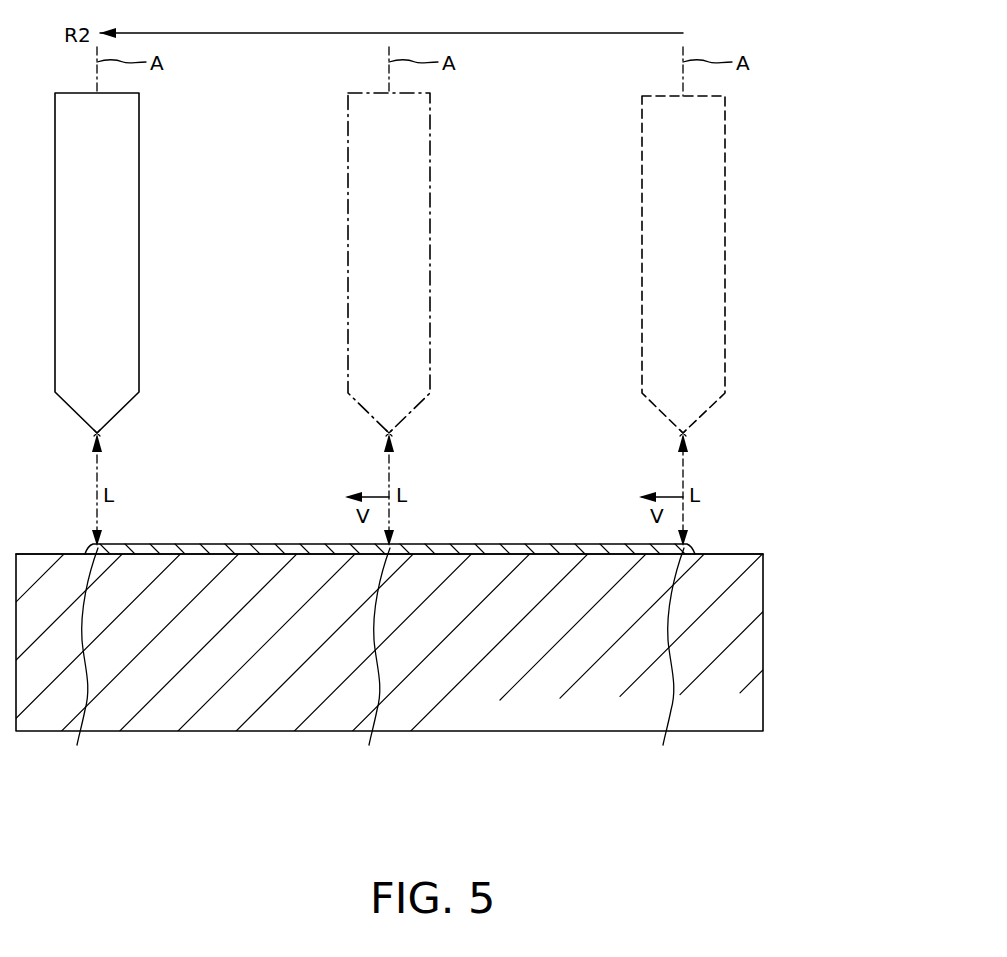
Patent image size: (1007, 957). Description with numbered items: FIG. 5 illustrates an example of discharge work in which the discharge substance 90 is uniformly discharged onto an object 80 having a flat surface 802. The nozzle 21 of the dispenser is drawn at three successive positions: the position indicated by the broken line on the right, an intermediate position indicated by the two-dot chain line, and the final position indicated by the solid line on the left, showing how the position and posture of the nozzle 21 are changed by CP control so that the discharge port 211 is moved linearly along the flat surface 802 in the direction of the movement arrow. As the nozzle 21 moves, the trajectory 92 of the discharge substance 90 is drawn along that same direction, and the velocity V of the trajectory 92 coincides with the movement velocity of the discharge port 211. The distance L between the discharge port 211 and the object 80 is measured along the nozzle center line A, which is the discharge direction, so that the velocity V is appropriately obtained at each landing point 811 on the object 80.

The nozzle 21 is at (142, 240).
The discharge port 211 is at (99, 435).
The trajectory 92 is at (568, 545).
The discharge substance 90 is at (390, 516).
The object 80 is at (768, 592).
The flat surface 802 is at (706, 556).
The landing point 811 is at (370, 660).